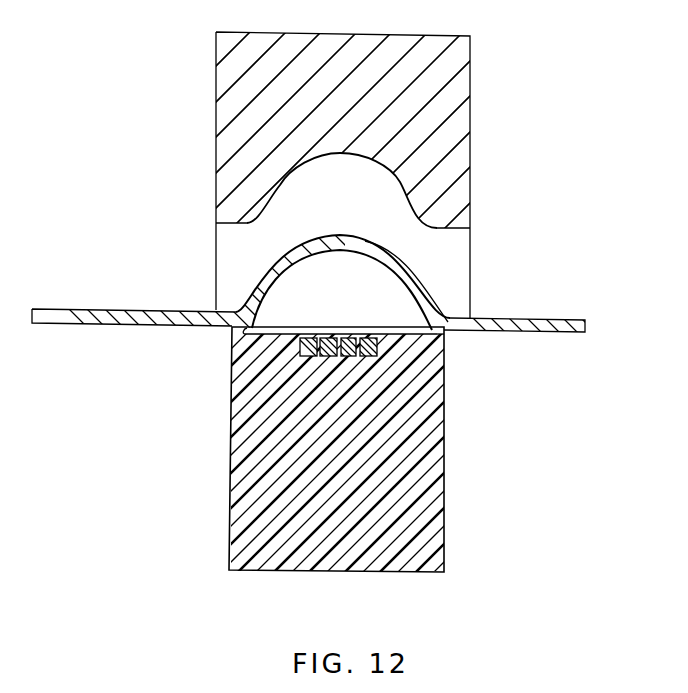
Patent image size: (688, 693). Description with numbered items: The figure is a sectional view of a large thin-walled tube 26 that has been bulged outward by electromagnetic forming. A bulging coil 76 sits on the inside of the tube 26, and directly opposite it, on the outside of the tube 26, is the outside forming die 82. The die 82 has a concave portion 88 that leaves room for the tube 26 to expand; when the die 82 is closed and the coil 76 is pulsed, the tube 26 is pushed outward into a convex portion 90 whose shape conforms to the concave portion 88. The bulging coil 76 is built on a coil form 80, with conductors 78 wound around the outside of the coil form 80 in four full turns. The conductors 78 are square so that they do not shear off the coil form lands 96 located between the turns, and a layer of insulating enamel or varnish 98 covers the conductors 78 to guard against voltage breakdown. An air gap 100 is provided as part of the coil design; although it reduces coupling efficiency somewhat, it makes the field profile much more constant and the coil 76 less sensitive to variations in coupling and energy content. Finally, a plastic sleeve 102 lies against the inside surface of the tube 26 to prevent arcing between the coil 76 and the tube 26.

The outside forming die 82 is at (438, 110).
The concave portion 88 is at (345, 153).
The convex portion 90 is at (343, 237).
The tube 26 is at (528, 320).
The coil form 80 is at (413, 450).
The plastic sleeve 102 is at (237, 339).
The air gap 100 is at (445, 335).
The conductors 78 is at (305, 337).
The coil form lands 96 is at (340, 337).
The insulating enamel or varnish 98 is at (370, 337).
The bulging coil 76 is at (208, 428).